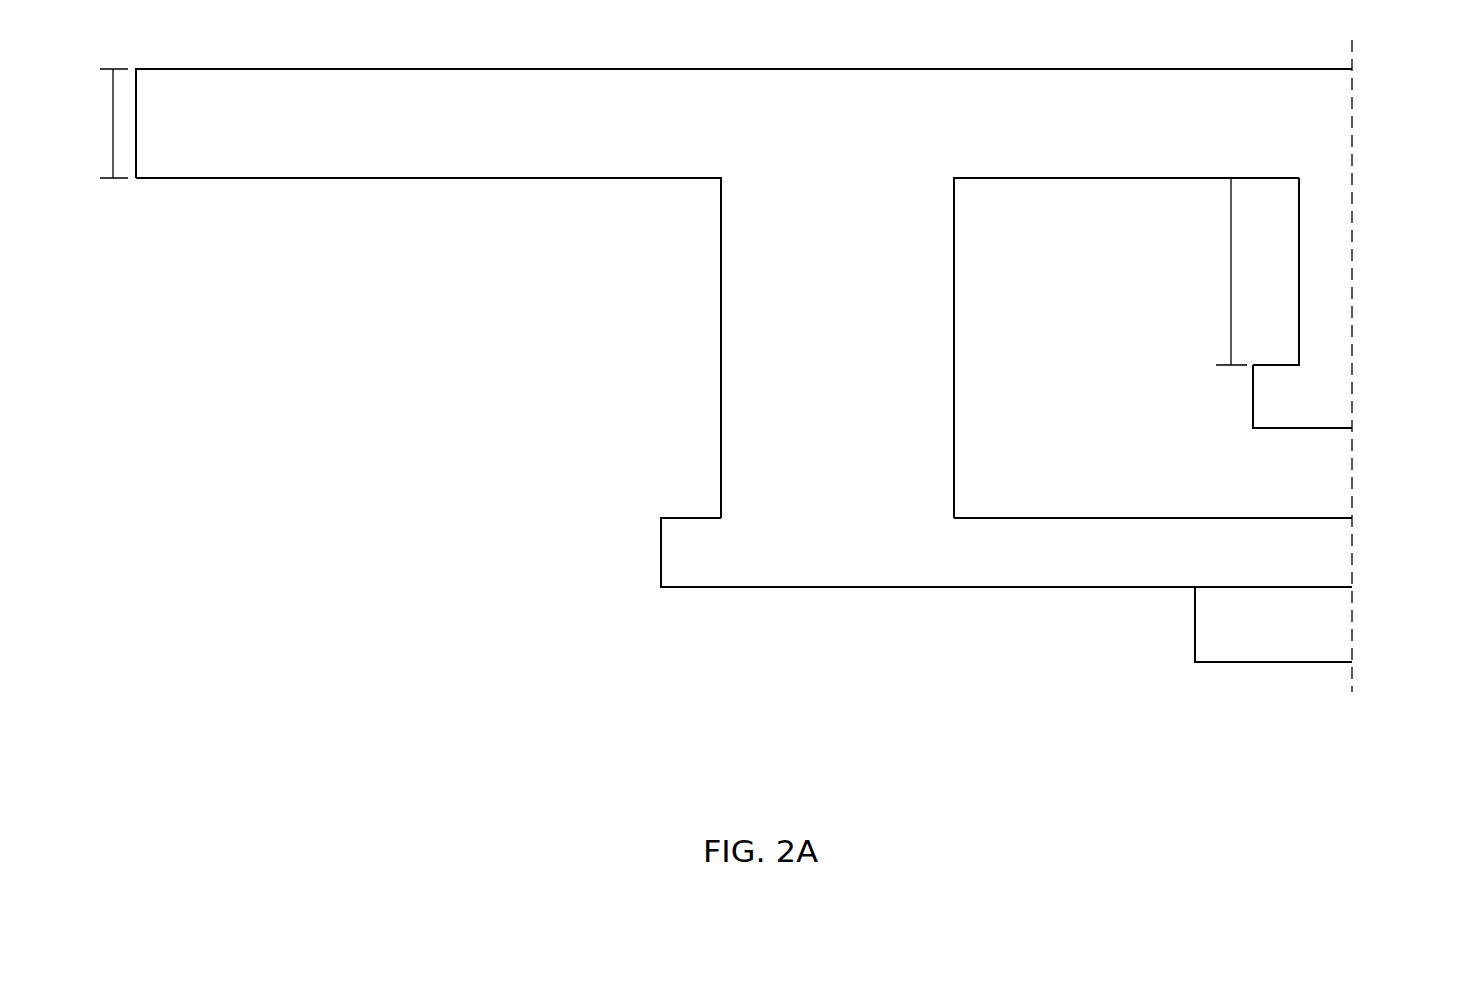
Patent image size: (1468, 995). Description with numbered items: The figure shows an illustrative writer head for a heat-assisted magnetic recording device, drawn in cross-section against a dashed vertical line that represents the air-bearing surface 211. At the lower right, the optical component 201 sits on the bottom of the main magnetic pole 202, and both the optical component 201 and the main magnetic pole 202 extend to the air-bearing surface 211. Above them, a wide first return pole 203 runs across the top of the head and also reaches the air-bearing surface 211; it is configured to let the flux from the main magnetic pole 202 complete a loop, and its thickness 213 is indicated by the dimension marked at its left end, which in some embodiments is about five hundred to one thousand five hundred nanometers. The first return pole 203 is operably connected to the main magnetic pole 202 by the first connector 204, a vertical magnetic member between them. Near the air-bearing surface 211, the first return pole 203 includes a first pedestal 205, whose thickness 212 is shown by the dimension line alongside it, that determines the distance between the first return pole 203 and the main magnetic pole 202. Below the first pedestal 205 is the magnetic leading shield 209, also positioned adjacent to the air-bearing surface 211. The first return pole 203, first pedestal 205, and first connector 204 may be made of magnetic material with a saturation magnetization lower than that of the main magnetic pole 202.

The optical component 201 is at (1352, 625).
The main magnetic pole 202 is at (1352, 555).
The first return pole 203 is at (1352, 120).
The first connector 204 is at (721, 330).
The first pedestal 205 is at (1352, 193).
The magnetic leading shield 209 is at (1352, 388).
The air-bearing surface 211 is at (1352, 468).
The thickness of first pedestal 212 is at (1231, 272).
The thickness of first return pole 213 is at (112, 123).